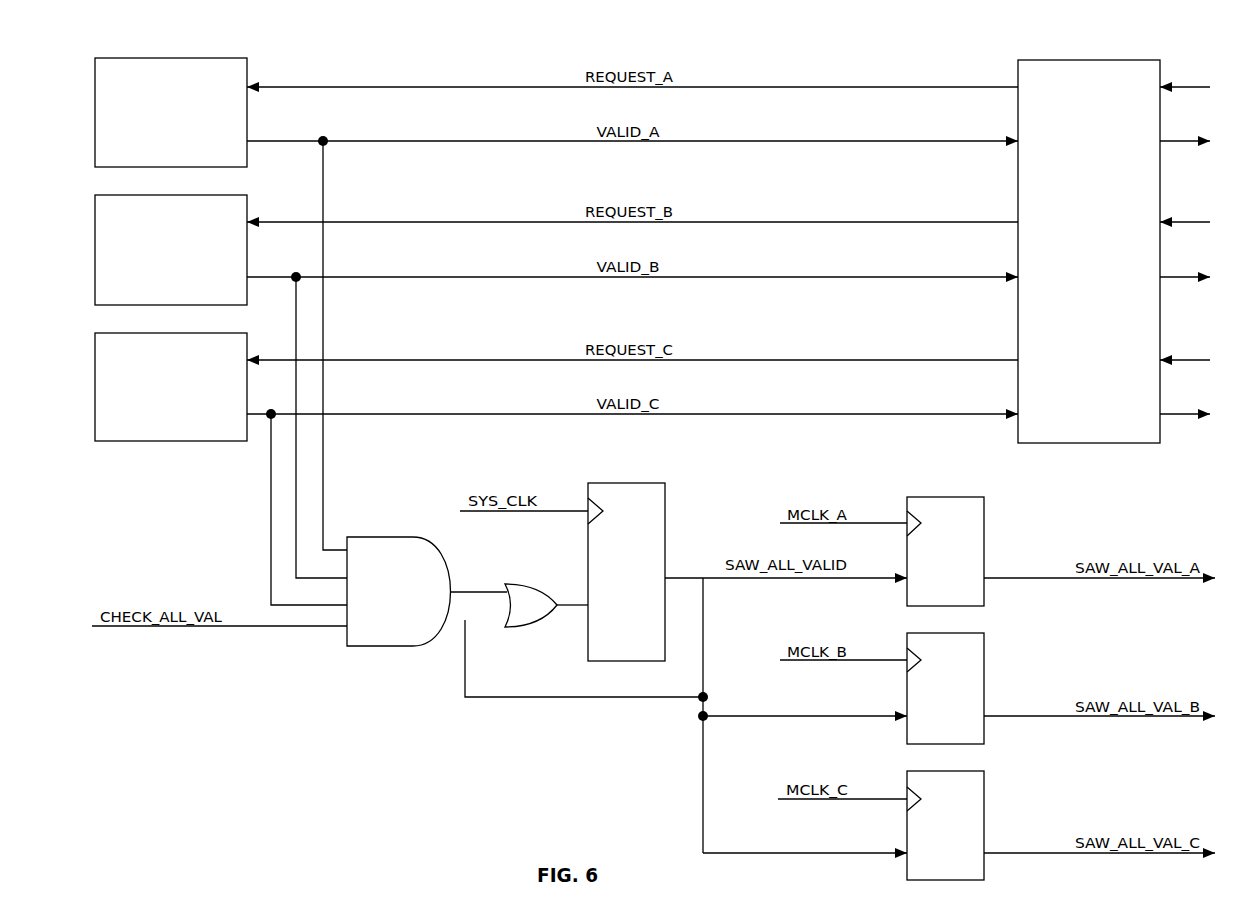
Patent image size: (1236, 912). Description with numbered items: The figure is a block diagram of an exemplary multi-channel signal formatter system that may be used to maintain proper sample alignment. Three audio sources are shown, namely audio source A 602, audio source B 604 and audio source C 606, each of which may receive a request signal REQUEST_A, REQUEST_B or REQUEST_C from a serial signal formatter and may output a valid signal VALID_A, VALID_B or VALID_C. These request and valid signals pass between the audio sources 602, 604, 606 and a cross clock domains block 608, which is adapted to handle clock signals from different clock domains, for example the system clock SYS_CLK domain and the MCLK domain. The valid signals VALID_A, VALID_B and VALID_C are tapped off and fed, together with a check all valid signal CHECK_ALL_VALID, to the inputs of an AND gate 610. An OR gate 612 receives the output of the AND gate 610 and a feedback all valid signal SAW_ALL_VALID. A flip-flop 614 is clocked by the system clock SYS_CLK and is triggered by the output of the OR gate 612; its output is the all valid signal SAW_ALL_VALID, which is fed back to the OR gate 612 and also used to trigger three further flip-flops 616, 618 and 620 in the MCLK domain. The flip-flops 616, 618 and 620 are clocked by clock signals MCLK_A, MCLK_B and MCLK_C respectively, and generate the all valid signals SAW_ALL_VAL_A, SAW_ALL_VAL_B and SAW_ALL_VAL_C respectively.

The audio source A 602 is at (95, 95).
The audio source B 604 is at (95, 231).
The audio source C 606 is at (95, 382).
The cross clock domains block 608 is at (1132, 60).
The AND gate 610 is at (383, 646).
The OR gate 612 is at (523, 627).
The flip-flop 614 is at (665, 517).
The flip-flop 616 is at (984, 515).
The flip-flop 618 is at (984, 668).
The flip-flop 620 is at (984, 802).